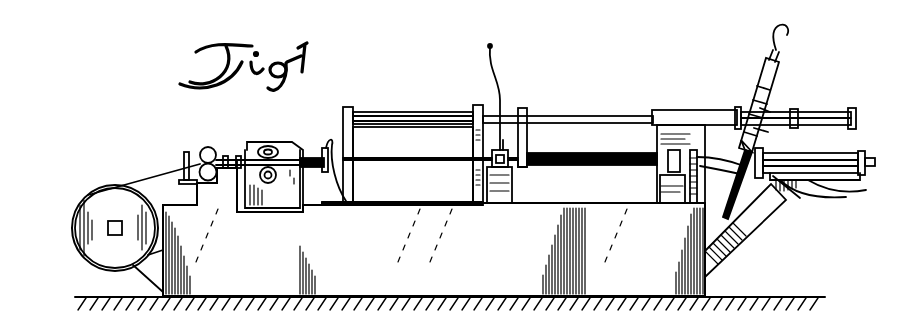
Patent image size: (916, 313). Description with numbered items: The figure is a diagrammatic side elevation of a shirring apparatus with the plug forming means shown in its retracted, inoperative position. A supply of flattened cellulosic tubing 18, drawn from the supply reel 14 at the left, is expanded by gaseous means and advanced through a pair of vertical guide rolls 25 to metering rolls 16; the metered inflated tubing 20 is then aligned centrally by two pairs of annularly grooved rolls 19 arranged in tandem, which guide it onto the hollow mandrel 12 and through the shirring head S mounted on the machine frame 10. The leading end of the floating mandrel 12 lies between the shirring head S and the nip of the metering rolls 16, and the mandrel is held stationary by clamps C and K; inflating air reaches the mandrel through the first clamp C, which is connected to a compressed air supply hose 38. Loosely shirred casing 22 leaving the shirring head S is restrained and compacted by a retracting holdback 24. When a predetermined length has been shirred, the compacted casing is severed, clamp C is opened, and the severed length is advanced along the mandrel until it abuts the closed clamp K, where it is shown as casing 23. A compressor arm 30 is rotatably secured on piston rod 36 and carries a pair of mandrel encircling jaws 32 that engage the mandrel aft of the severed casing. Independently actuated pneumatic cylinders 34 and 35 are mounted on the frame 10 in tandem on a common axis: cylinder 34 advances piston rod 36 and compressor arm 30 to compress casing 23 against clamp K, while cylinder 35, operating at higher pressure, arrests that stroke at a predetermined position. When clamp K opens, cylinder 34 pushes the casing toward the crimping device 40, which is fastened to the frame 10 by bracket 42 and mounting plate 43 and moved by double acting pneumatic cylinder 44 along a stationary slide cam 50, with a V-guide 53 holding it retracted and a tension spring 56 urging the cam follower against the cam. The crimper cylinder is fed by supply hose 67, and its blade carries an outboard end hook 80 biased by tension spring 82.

The machine frame 10 is at (162, 294).
The hollow mandrel 12 is at (512, 170).
The supply reel 14 is at (95, 213).
The metering rolls 16 is at (203, 150).
The cellulosic tubing 18 is at (133, 178).
The annularly grooved rolls 19 is at (239, 155).
The metered inflated tubing 20 is at (212, 165).
The loosely shirred casing 22 is at (306, 155).
The severed shirred casing 23 is at (606, 153).
The retracting holdback 24 is at (324, 146).
The vertical guide rolls 25 is at (183, 158).
The compressor arm 30 is at (527, 141).
The mandrel encircling jaws 32 is at (525, 170).
The pneumatic cylinder 34 is at (416, 118).
The pneumatic cylinder 35 is at (824, 112).
The piston rod 36 is at (544, 117).
The compressed air supply hose 38 is at (501, 82).
The crimping device 40 is at (750, 110).
The bracket 42 is at (786, 199).
The mounting plate 43 is at (842, 184).
The double acting pneumatic cylinder 44 is at (846, 153).
The slide cam 50 is at (746, 160).
The V-guide 53 is at (800, 193).
The tension spring 56 is at (750, 220).
The supply hose 67 is at (772, 38).
The outboard end hook 80 is at (768, 130).
The tension spring 82 is at (772, 111).
The first clamp C is at (504, 146).
The clamp K is at (664, 151).
The shirring head S is at (265, 144).